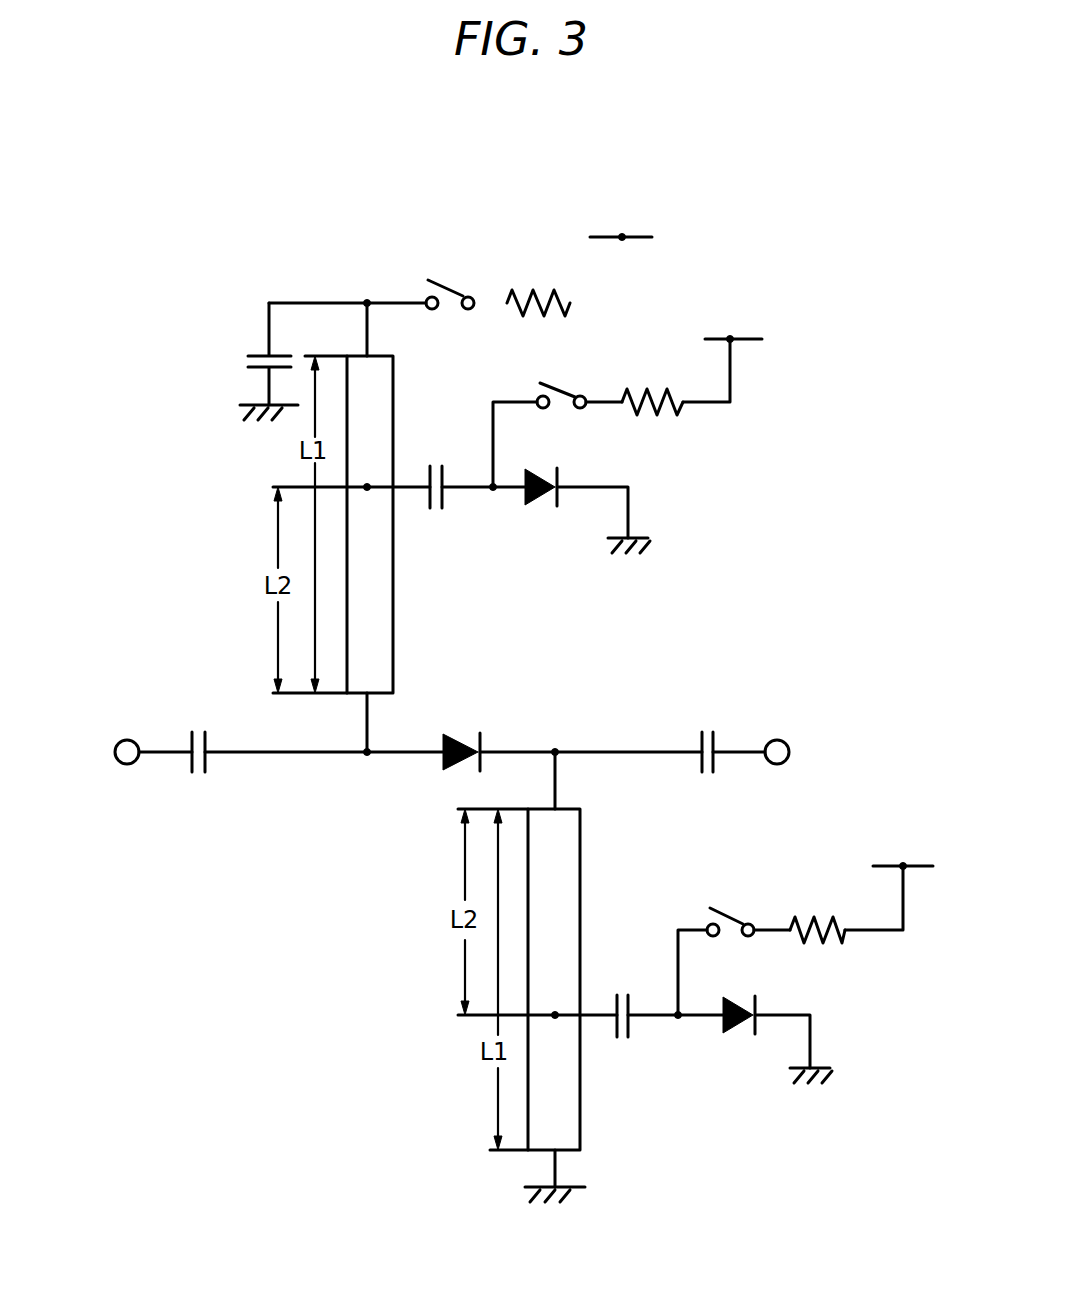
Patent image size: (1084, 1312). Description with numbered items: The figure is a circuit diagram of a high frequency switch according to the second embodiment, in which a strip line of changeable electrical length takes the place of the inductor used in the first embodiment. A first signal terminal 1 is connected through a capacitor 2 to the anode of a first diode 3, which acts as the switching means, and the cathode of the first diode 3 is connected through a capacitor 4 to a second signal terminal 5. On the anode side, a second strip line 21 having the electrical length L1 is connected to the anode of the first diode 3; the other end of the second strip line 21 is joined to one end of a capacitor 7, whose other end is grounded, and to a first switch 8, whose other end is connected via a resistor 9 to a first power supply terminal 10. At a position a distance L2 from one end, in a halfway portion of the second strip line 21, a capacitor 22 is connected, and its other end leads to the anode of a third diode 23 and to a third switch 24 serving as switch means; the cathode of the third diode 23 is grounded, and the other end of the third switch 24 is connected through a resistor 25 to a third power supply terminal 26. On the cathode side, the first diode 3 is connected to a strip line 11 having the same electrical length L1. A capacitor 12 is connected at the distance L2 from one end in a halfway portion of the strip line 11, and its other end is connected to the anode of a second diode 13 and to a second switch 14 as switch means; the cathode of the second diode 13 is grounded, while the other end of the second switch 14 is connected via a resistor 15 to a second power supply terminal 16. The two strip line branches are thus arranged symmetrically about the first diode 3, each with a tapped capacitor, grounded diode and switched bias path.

The first signal terminal 1 is at (128, 740).
The capacitor 2 is at (197, 774).
The first diode 3 is at (455, 732).
The capacitor 4 is at (708, 730).
The second signal terminal 5 is at (785, 742).
The capacitor 7 is at (248, 357).
The first switch 8 is at (450, 287).
The resistor 9 is at (530, 288).
The first power supply terminal 10 is at (640, 238).
The strip line 11 is at (580, 1093).
The capacitor 12 is at (620, 995).
The second diode 13 is at (737, 1033).
The second switch 14 is at (728, 908).
The resistor 15 is at (825, 934).
The second power supply terminal 16 is at (880, 866).
The second strip line 21 is at (393, 630).
The capacitor 22 is at (431, 466).
The third diode 23 is at (537, 506).
The third switch 24 is at (540, 383).
The resistor 25 is at (647, 414).
The third power supply terminal 26 is at (745, 341).